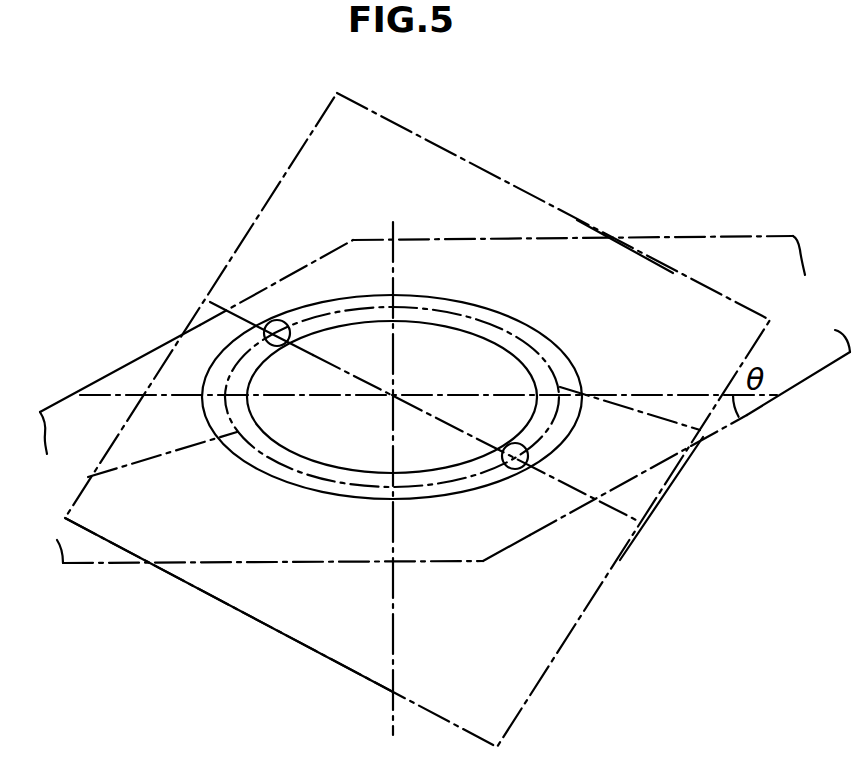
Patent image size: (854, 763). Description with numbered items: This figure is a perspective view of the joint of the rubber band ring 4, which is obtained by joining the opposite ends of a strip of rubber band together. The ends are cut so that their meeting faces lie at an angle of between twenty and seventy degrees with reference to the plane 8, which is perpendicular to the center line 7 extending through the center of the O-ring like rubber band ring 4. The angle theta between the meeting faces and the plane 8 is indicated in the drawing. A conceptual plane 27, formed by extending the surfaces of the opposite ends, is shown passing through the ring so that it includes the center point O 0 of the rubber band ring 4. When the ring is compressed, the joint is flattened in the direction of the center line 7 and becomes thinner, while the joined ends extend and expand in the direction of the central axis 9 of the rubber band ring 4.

The center point O 0 is at (393, 395).
The rubber band ring 4 is at (243, 335).
The center line 7 is at (393, 262).
The plane 8 is at (110, 375).
The central axis 9 is at (85, 487).
The conceptual plane 27 is at (563, 648).